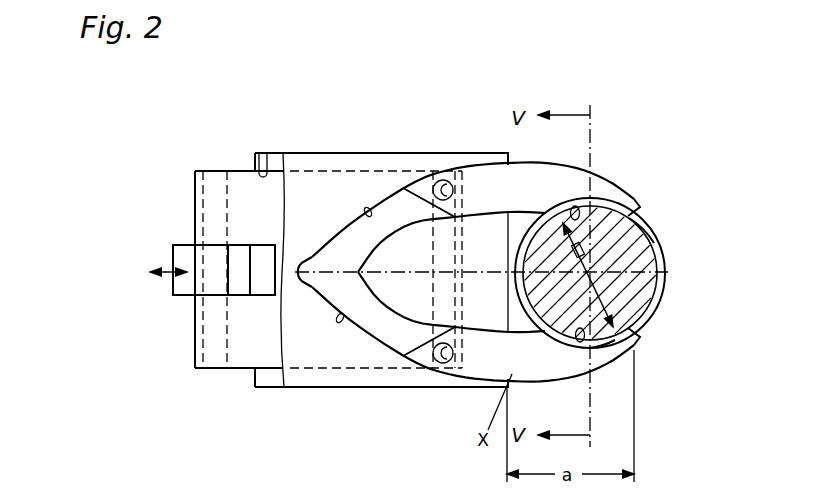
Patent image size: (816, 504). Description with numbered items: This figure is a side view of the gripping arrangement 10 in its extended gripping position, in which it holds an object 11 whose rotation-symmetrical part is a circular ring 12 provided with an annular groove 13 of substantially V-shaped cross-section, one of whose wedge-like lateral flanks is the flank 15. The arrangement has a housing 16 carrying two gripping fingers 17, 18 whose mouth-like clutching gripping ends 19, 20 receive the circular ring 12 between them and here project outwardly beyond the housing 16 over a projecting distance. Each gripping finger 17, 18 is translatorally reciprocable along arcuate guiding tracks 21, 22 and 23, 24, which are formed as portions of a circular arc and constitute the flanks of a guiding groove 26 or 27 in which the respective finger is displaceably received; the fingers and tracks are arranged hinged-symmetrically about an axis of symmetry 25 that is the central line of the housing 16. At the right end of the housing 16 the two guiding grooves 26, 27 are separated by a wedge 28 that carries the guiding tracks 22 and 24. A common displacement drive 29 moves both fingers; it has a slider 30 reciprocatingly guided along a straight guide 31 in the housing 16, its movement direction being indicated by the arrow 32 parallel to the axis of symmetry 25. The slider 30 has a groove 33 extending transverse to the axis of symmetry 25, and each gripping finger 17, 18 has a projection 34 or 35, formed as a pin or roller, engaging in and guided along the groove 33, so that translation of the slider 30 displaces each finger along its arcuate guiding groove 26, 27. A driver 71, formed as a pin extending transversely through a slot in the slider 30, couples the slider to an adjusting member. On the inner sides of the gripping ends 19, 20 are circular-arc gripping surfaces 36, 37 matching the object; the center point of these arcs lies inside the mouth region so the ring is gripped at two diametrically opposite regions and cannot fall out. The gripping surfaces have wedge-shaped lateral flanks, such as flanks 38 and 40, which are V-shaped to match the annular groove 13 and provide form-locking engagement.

The gripping arrangement 10 is at (231, 147).
The object 11 is at (652, 339).
The circular ring 12 is at (661, 309).
The annular groove 13 is at (639, 219).
The lateral flank 15 is at (650, 224).
The housing 16 is at (331, 153).
The gripping finger 17 is at (484, 176).
The gripping finger 18 is at (481, 371).
The gripping end 19 is at (618, 196).
The gripping end 20 is at (601, 358).
The guiding track 21 is at (369, 207).
The guiding track 22 is at (398, 217).
The guiding track 23 is at (327, 306).
The guiding track 24 is at (373, 317).
The axis of symmetry 25 is at (256, 386).
The guiding groove 26 is at (386, 211).
The guiding groove 27 is at (339, 323).
The wedge 28 is at (472, 259).
The displacement drive 29 is at (148, 286).
The slider 30 is at (199, 202).
The straight guide 31 is at (272, 155).
The arrow 32 is at (166, 277).
The groove 33 is at (409, 296).
The projection 34 is at (446, 180).
The projection 35 is at (444, 363).
The gripping surface 36 is at (560, 210).
The gripping surface 37 is at (581, 330).
The lateral flank 38 is at (629, 209).
The lateral flank 40 is at (614, 346).
The driver 71 is at (214, 289).